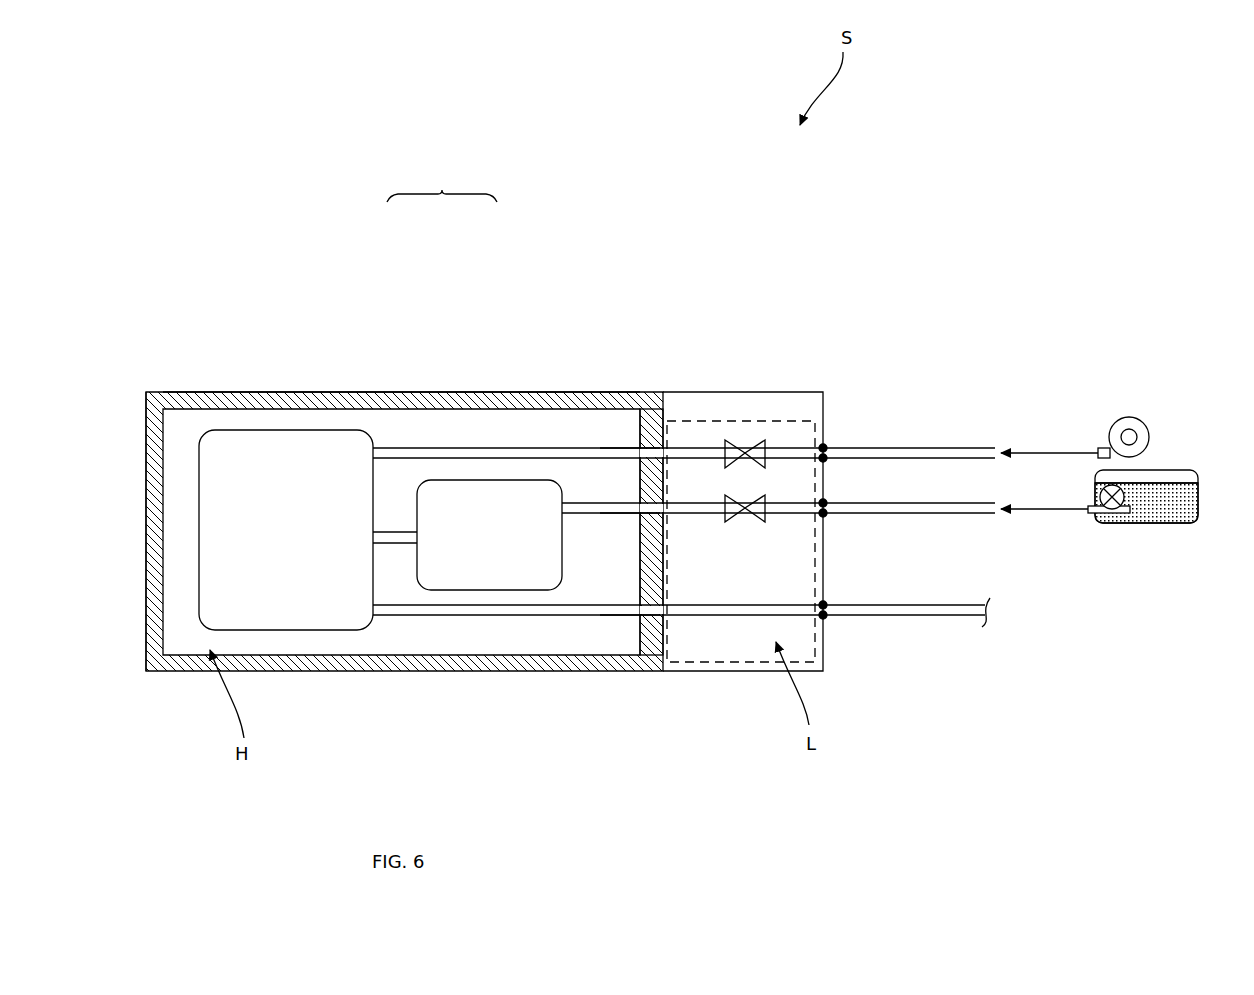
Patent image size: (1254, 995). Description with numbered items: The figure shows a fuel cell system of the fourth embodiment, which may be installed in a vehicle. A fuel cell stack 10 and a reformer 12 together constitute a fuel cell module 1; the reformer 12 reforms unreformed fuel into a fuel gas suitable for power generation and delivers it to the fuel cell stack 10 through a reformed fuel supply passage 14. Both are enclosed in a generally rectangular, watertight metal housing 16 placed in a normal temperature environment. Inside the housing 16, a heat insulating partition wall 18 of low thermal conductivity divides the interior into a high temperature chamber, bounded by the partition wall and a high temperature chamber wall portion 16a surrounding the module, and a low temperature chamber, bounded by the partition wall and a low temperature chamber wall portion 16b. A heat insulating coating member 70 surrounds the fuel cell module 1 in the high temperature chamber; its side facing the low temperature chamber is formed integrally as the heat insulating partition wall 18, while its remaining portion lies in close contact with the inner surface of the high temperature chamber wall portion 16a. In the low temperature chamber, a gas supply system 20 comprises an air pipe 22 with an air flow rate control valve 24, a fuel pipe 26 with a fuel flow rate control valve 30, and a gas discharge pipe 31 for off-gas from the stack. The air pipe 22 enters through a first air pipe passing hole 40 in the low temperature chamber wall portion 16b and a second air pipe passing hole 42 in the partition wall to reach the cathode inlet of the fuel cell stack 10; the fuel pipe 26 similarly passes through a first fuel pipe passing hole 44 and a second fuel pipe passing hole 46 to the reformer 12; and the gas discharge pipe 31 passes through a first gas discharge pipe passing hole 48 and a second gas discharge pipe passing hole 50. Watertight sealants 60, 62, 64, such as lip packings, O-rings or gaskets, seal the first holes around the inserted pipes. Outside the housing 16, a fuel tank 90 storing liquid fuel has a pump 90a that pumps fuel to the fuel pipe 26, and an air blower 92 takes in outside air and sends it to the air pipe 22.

The fuel cell module 1 is at (442, 182).
The fuel cell stack 10 is at (350, 430).
The reformer 12 is at (488, 480).
The reformed fuel supply passage 14 is at (393, 532).
The housing 16 is at (585, 392).
The high temperature chamber wall portion 16a is at (178, 392).
The low temperature chamber wall portion 16b is at (798, 392).
The heat insulating partition wall 18 is at (643, 392).
The gas supply system 20 is at (722, 421).
The air pipe 22 is at (683, 458).
The air flow rate control valve 24 is at (765, 462).
The fuel pipe 26 is at (683, 513).
The fuel flow rate control valve 30 is at (755, 523).
The gas discharge pipe 31 is at (695, 615).
The first air pipe passing hole 40 is at (826, 458).
The second air pipe passing hole 42 is at (640, 452).
The first fuel pipe passing hole 44 is at (826, 503).
The second fuel pipe passing hole 46 is at (640, 503).
The first gas discharge pipe passing hole 48 is at (826, 605).
The second gas discharge pipe passing hole 50 is at (640, 605).
The watertight sealant 60 is at (825, 447).
The watertight sealant 62 is at (826, 513).
The watertight sealant 64 is at (826, 615).
The heat insulating coating member 70 is at (250, 392).
The fuel tank 90 is at (1183, 470).
The pump 90a is at (1108, 517).
The air blower 92 is at (1130, 417).